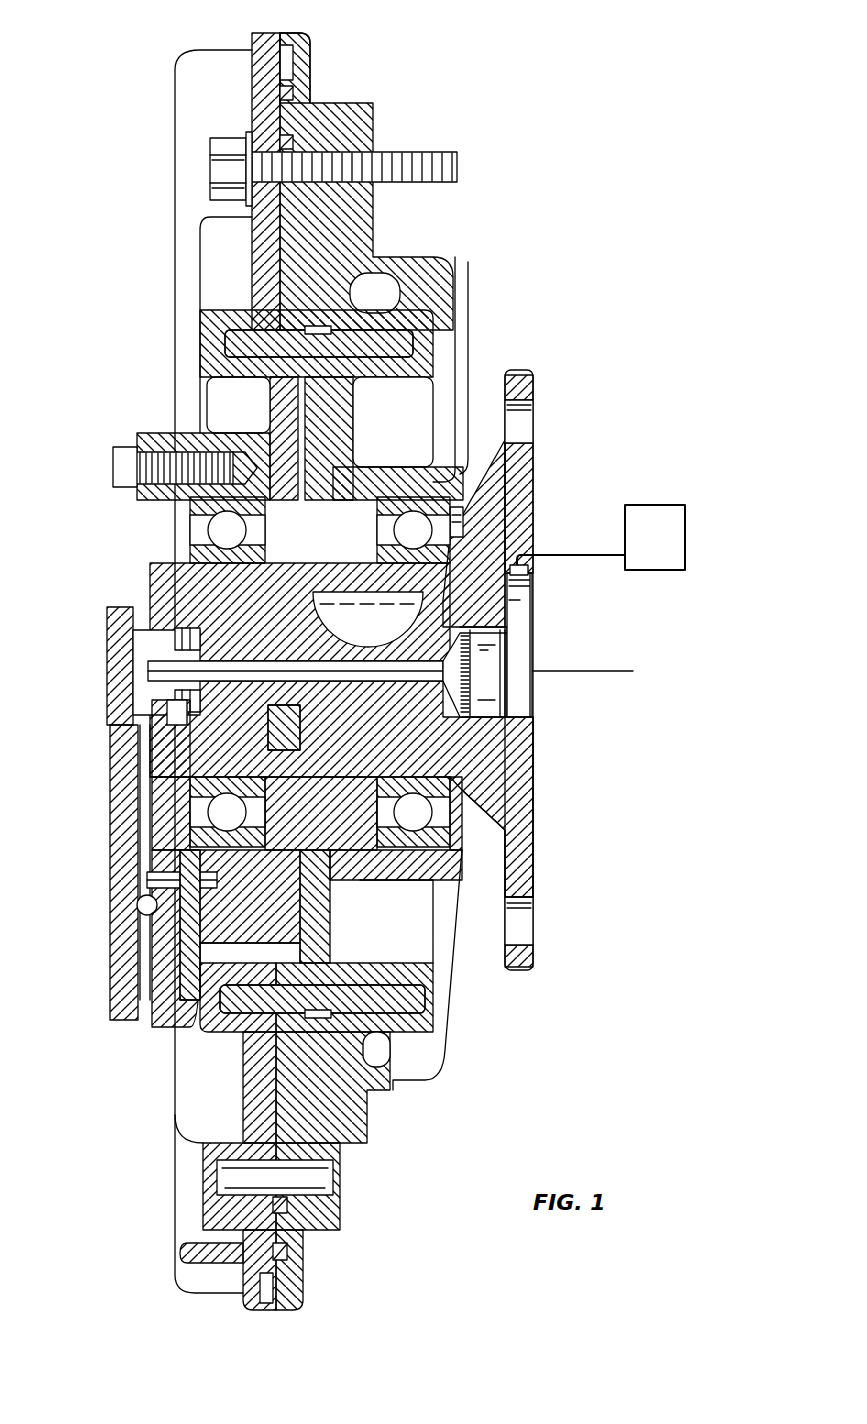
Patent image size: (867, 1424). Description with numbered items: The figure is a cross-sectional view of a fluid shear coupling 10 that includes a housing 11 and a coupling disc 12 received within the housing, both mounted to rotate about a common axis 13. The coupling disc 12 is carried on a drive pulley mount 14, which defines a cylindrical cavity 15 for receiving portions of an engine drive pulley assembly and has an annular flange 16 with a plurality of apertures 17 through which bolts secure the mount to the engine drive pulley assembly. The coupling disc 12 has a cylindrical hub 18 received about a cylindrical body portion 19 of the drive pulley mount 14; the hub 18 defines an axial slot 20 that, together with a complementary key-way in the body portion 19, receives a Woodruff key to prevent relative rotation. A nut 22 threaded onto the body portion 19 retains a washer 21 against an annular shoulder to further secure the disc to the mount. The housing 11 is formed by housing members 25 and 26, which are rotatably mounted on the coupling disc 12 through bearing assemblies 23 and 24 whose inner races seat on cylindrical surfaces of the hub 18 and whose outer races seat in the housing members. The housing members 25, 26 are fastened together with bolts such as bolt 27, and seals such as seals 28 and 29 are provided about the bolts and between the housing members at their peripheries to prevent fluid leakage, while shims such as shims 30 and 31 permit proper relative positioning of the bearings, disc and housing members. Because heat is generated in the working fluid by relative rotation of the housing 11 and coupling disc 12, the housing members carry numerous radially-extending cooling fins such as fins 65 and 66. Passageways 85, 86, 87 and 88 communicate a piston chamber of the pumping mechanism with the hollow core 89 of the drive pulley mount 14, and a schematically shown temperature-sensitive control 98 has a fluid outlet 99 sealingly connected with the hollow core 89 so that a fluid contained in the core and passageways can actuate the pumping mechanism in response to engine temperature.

The fluid shear coupling 10 is at (582, 332).
The housing 11 is at (373, 237).
The coupling disc 12 is at (325, 432).
The common axis 13 is at (600, 668).
The drive pulley mount 14 is at (480, 563).
The cylindrical cavity 15 is at (525, 772).
The annular flange 16 is at (527, 483).
The apertures 17 is at (525, 418).
The cylindrical hub 18 is at (307, 812).
The cylindrical body portion 19 is at (341, 789).
The axial slot 20 is at (433, 603).
The washer 21 is at (293, 735).
The nut 22 is at (240, 735).
The bearing assembly 23 is at (215, 808).
The bearing assembly 24 is at (410, 810).
The housing member 25 is at (260, 78).
The housing member 26 is at (310, 40).
The bolt 27 is at (215, 170).
The seal 28 is at (293, 140).
The seal 29 is at (293, 95).
The shim 30 is at (185, 510).
The shim 31 is at (375, 545).
The cooling fin 65 is at (200, 268).
The cooling fin 66 is at (443, 375).
The passageway 85 is at (185, 920).
The passageway 86 is at (210, 888).
The passageway 87 is at (140, 795).
The passageway 88 is at (133, 650).
The hollow core 89 is at (160, 675).
The controls 98 is at (601, 539).
The fluid outlet 99 is at (555, 568).